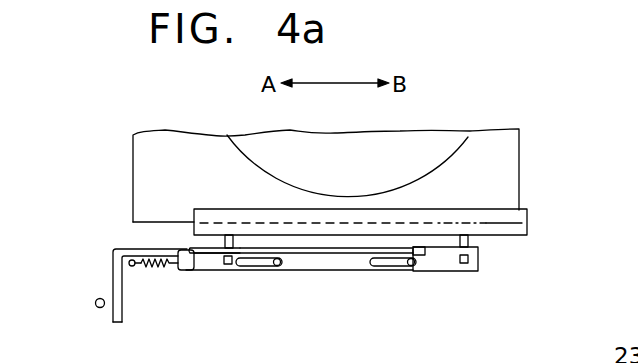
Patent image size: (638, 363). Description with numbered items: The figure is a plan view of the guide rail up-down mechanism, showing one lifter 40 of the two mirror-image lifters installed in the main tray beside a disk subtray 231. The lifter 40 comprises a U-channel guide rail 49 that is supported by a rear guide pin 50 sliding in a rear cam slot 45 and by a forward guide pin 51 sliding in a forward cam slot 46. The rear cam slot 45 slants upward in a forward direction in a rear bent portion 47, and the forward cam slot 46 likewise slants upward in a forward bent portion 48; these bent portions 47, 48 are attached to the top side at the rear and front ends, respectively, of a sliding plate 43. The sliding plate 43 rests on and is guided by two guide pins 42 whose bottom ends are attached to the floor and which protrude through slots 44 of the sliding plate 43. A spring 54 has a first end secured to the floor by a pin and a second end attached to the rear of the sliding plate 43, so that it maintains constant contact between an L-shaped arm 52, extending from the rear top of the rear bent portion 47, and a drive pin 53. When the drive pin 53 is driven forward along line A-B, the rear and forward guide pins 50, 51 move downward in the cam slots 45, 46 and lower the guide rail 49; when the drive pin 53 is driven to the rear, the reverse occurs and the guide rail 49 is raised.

The disk subtray 231 is at (497, 160).
The guide rail 49 is at (532, 216).
The forward bent portion 48 is at (437, 238).
The lifter 40 is at (560, 231).
The rear guide pin 50 is at (236, 236).
The forward guide pin 51 is at (470, 243).
The rear bent portion 47 is at (193, 247).
The sliding plate 43 is at (357, 268).
The slot 44 is at (260, 265).
The guide pin 42 is at (279, 266).
The forward cam slot 46 is at (428, 250).
The rear cam slot 45 is at (191, 252).
The L-shaped arm 52 is at (112, 262).
The drive pin 53 is at (96, 306).
The spring 54 is at (162, 266).